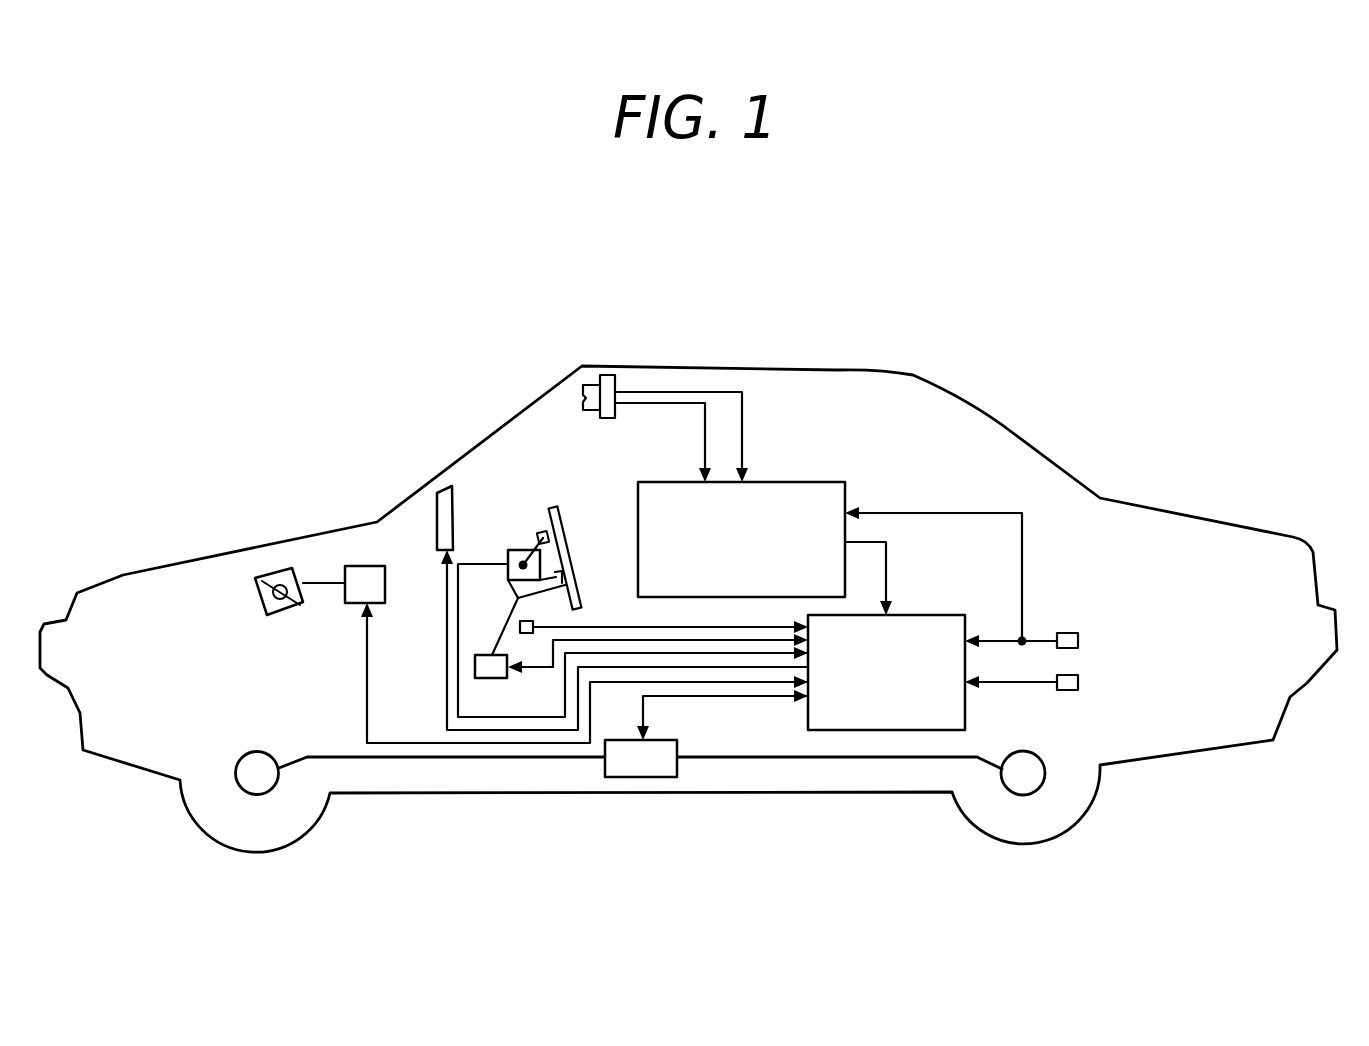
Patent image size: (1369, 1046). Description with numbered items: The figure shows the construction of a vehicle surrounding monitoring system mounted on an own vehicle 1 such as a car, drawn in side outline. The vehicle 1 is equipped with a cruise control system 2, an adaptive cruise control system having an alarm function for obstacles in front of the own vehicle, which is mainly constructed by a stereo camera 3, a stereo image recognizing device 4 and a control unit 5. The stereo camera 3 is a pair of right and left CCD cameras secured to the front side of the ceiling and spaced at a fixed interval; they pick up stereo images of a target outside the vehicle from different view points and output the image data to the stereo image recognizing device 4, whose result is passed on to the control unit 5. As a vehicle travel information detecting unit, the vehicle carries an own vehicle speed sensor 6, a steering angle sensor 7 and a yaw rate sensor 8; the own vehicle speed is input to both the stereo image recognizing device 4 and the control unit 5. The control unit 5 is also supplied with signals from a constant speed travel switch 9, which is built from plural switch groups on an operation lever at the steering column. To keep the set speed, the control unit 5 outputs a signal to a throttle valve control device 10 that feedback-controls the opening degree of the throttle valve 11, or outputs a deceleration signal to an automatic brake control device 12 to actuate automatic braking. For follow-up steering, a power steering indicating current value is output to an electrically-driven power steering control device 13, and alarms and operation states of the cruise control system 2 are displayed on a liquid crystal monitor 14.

The vehicle 1 is at (776, 312).
The cruise control system 2 is at (995, 462).
The stereo camera 3 is at (592, 380).
The stereo image recognizing device 4 is at (798, 482).
The control unit 5 is at (927, 613).
The own vehicle speed sensor 6 is at (1080, 640).
The steering angle sensor 7 is at (518, 625).
The yaw rate sensor 8 is at (1080, 682).
The constant speed travel switch 9 is at (520, 550).
The throttle valve control device 10 is at (363, 568).
The throttle valve 11 is at (273, 572).
The automatic brake control device 12 is at (640, 767).
The electrically-driven power steering control device 13 is at (492, 678).
The liquid crystal monitor 14 is at (442, 513).